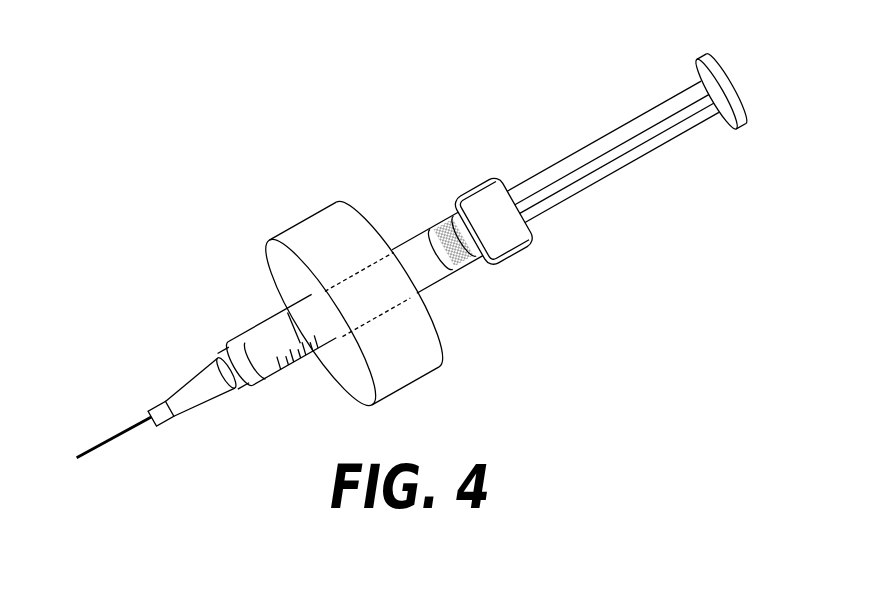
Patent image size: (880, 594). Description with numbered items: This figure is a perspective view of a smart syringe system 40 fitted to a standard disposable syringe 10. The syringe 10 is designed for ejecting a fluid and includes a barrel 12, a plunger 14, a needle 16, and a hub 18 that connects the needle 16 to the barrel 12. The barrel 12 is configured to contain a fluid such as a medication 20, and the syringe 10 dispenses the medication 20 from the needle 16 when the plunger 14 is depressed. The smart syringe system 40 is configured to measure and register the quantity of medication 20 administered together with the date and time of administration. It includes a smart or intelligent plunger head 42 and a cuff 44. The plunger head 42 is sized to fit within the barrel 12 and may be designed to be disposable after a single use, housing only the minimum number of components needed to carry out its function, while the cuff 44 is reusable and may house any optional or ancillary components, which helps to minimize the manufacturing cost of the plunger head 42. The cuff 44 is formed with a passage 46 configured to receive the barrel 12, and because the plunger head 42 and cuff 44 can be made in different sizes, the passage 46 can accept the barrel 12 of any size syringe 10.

The syringe 10 is at (153, 152).
The barrel 12 is at (270, 387).
The plunger 14 is at (566, 150).
The needle 16 is at (109, 434).
The hub 18 is at (193, 372).
The medication 20 is at (267, 340).
The smart syringe system 40 is at (344, 158).
The plunger head 42 is at (431, 220).
The cuff 44 is at (302, 235).
The passage 46 is at (280, 303).